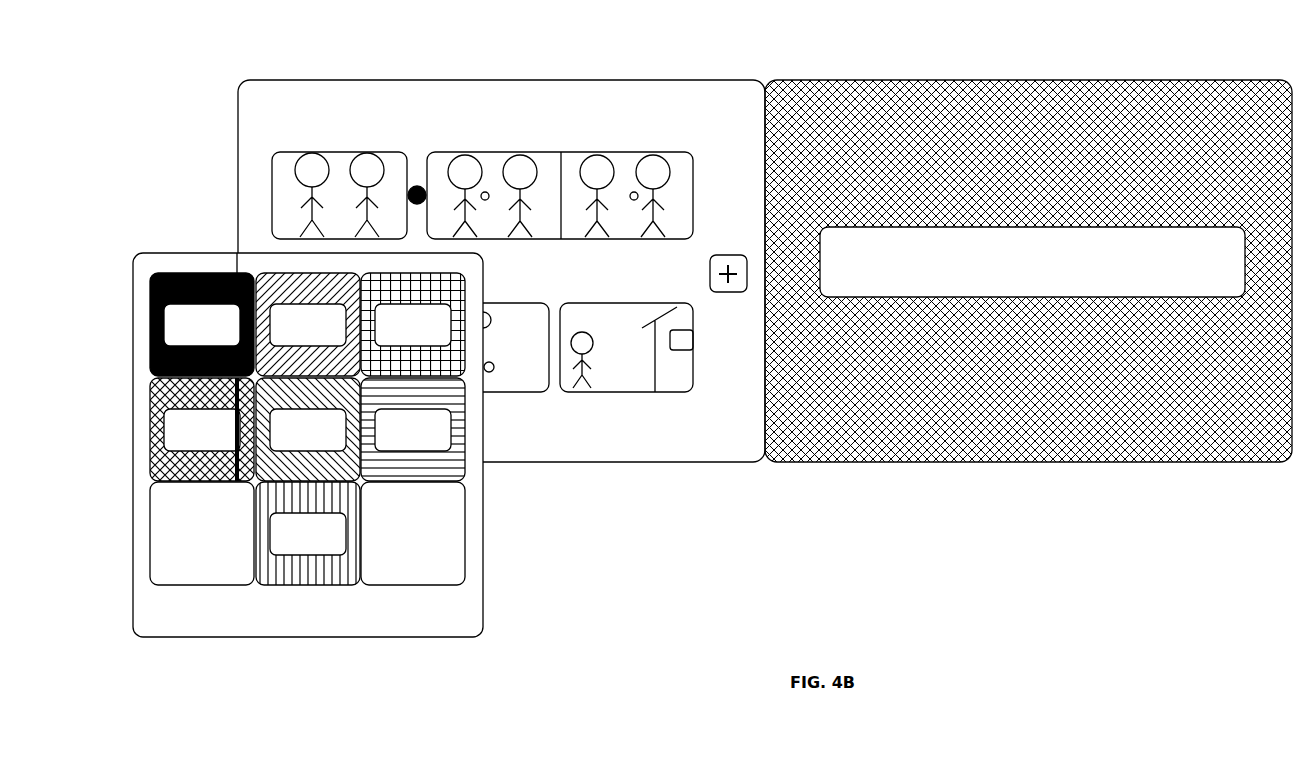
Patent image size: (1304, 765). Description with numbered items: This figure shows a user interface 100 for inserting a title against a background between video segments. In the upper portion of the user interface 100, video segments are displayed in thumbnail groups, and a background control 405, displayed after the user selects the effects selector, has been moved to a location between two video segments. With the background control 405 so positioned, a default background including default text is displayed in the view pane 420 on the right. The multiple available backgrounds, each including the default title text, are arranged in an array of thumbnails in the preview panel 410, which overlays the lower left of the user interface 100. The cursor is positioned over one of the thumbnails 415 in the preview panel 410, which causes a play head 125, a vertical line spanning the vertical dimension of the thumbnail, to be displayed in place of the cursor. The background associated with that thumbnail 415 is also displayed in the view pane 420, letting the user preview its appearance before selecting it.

The user interface 100 is at (238, 110).
The background control 405 is at (408, 198).
The view pane 420 is at (943, 81).
The preview panel 410 is at (483, 582).
The thumbnail 415 is at (255, 378).
The play head 125 is at (279, 471).